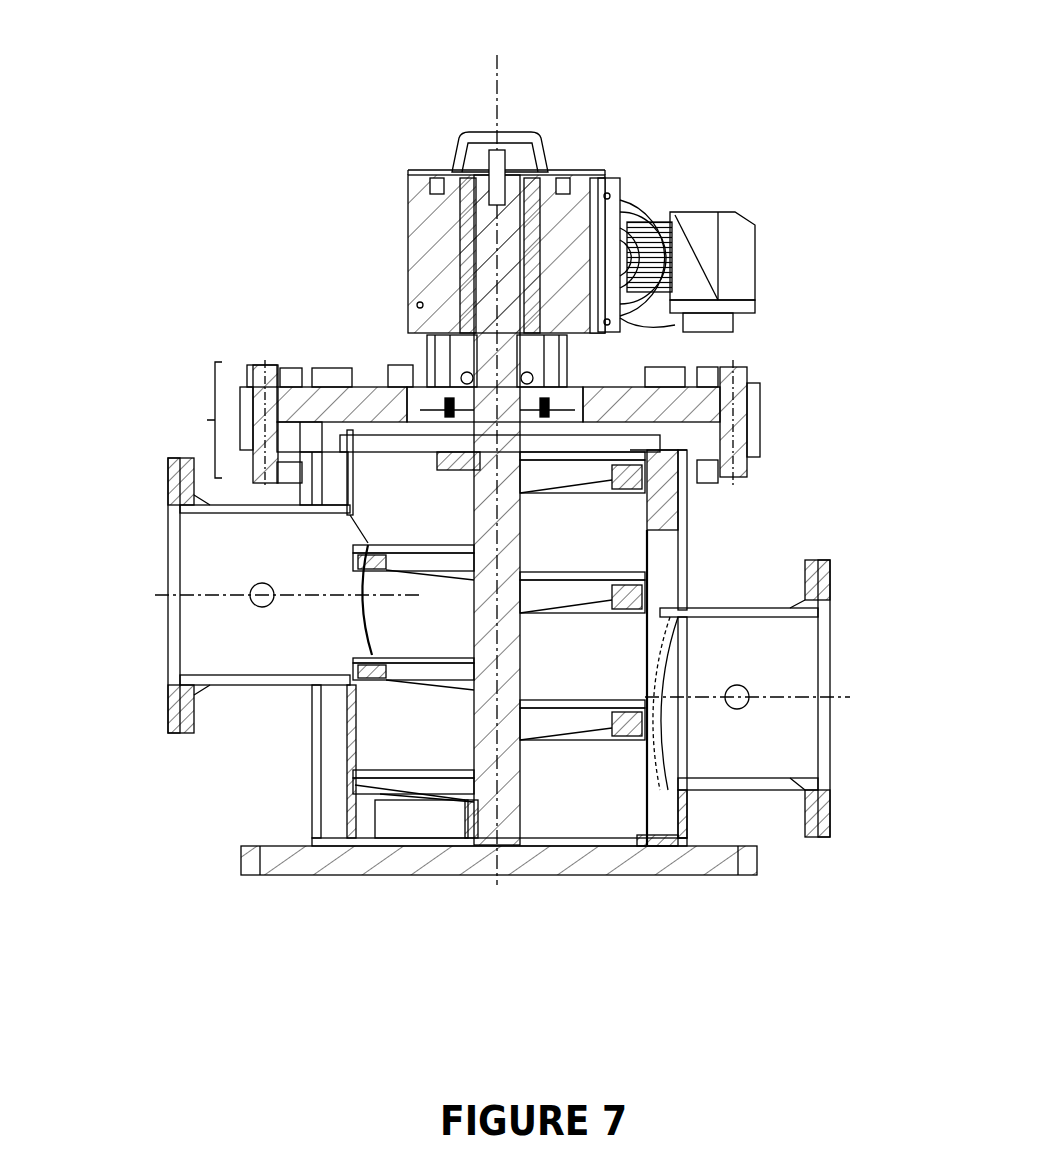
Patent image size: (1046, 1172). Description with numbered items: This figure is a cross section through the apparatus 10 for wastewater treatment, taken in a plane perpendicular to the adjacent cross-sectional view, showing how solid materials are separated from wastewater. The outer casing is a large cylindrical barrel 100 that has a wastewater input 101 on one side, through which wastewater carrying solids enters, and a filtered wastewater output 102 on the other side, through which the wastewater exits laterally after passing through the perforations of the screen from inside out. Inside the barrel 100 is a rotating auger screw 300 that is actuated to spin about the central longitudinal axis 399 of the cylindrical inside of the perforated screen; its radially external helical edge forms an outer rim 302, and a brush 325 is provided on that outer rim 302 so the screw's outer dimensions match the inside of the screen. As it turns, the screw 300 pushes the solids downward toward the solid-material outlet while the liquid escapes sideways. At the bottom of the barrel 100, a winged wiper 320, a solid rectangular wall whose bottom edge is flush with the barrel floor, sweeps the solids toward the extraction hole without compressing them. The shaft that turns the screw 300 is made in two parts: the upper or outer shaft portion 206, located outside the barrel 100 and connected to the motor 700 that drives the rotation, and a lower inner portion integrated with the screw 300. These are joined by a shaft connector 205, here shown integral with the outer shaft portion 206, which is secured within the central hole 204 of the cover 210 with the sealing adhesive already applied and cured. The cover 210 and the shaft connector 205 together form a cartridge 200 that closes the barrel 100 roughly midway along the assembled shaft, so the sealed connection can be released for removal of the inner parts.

The apparatus 10 is at (224, 138).
The central longitudinal axis 399 is at (499, 457).
The motor 700 is at (415, 288).
The upper or outer shaft portion 206 is at (490, 262).
The shaft connector 205 is at (456, 462).
The cartridge 200 is at (453, 424).
The cover 210 is at (685, 410).
The wastewater input 101 is at (202, 563).
The brush 325 is at (645, 505).
The central hole 204 is at (500, 572).
The screw 300 is at (590, 594).
The outer rim 302 is at (630, 615).
The filtered wastewater output 102 is at (767, 667).
The winged wiper 320 is at (387, 827).
The barrel 100 is at (315, 810).